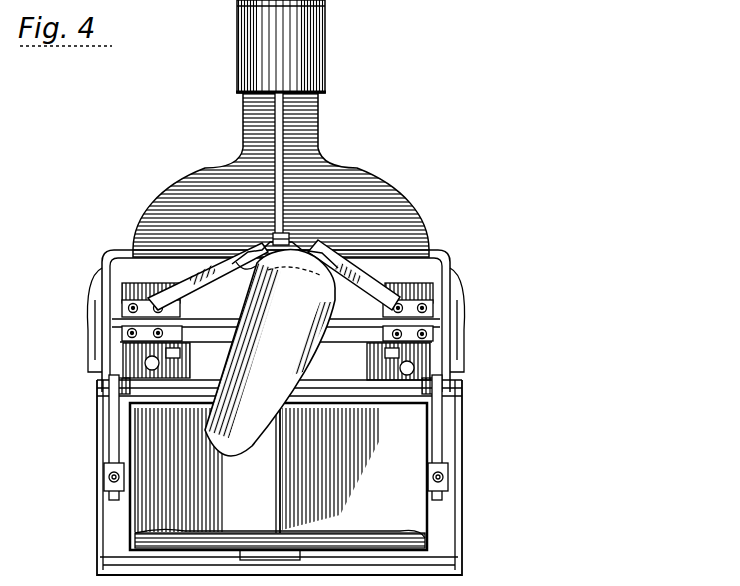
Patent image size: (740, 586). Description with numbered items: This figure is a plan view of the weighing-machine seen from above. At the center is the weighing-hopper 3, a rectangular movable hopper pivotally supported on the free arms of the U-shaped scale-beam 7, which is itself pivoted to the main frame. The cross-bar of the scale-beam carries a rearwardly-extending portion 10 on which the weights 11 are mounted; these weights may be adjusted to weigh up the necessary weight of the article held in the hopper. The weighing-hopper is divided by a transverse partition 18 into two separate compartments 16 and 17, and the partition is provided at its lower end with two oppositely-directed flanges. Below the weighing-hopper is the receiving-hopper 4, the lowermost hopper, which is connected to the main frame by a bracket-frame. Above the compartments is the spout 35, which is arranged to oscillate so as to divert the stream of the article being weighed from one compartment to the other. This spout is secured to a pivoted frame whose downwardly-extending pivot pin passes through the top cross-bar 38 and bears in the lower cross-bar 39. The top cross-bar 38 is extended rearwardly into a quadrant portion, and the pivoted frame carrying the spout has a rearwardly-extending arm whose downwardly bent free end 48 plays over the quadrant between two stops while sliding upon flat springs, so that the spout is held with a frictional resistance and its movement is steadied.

The weighing-hopper 3 is at (428, 527).
The receiving-hopper 4 is at (98, 449).
The scale-beam 7 is at (441, 425).
The rearwardly-extending portion 10 is at (279, 158).
The weights 11 is at (306, 72).
The compartment 16 is at (180, 479).
The compartment 17 is at (342, 449).
The transverse partition 18 is at (277, 483).
The spout 35 is at (270, 353).
The top cross-bar 38 is at (397, 286).
The lower cross-bar 39 is at (152, 272).
The free end of arm 48 is at (318, 246).